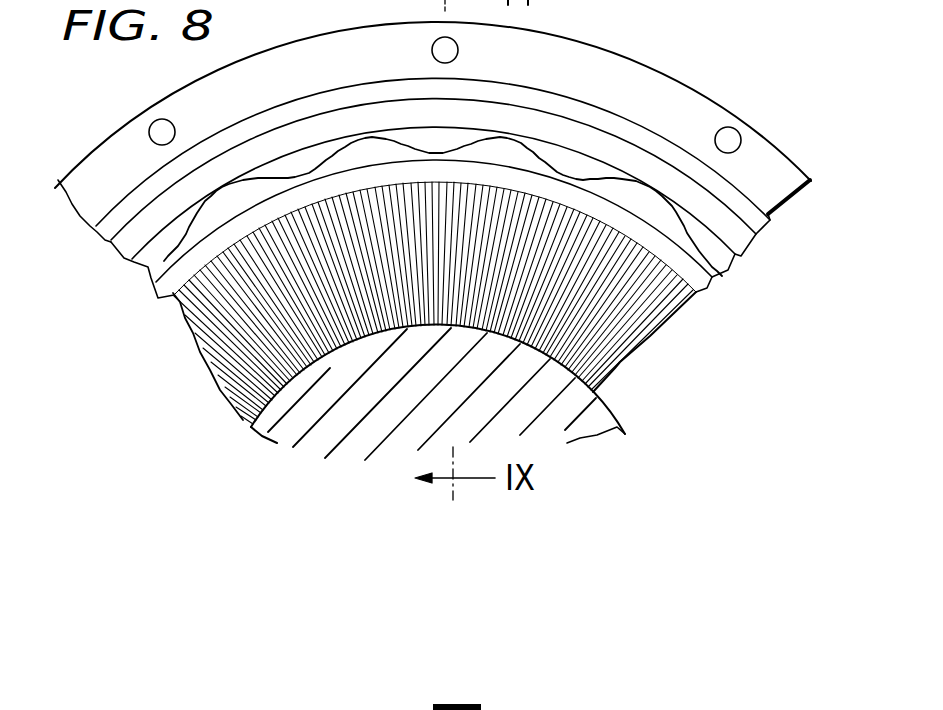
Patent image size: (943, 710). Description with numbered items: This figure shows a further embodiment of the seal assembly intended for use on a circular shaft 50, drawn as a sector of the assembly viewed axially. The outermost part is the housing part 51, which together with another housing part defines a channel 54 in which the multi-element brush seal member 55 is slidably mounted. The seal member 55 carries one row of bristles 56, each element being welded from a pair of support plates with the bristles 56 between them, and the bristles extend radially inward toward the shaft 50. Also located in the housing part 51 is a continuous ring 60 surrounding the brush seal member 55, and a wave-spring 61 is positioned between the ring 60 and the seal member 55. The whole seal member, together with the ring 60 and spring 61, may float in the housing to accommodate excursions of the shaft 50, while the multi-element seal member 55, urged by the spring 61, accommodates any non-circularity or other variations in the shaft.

The circular shaft 50 is at (268, 438).
The housing part 51 is at (763, 162).
The channel 54 is at (223, 138).
The multi-element brush seal member 55 is at (614, 360).
The bristles 56 is at (225, 327).
The continuous ring 60 is at (160, 210).
The wave-spring 61 is at (622, 187).